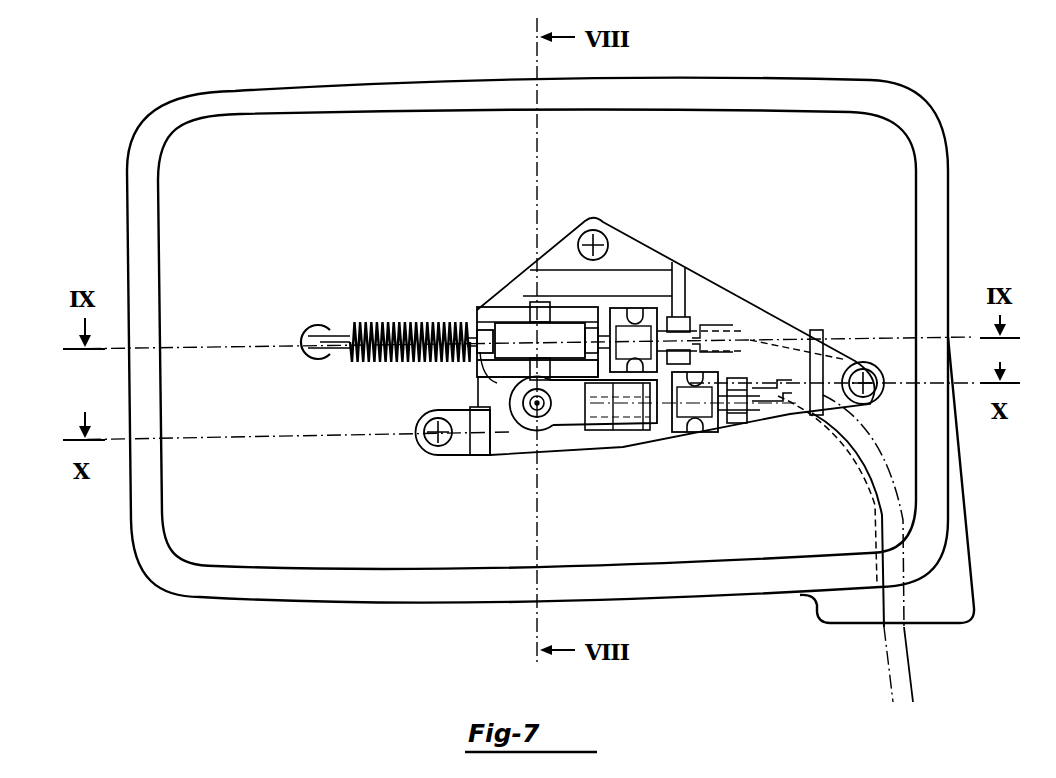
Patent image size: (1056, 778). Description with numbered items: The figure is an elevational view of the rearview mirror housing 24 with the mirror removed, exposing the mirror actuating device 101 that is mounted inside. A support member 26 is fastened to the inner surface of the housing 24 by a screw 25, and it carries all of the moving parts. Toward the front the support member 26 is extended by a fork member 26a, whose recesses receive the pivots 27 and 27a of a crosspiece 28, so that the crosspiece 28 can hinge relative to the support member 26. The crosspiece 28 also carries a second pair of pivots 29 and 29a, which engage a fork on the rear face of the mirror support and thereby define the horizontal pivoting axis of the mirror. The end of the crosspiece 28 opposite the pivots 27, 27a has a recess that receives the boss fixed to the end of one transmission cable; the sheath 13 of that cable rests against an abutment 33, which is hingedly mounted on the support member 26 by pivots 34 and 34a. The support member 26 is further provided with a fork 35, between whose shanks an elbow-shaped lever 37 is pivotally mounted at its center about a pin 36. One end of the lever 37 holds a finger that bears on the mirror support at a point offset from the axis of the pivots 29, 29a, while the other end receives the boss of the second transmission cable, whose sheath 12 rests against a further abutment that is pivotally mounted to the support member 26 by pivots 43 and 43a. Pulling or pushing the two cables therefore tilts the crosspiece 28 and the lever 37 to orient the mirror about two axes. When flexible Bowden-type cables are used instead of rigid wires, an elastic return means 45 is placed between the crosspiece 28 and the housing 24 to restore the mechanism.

The sheath 12 is at (852, 464).
The sheath 13 is at (897, 483).
The rearview mirror housing 24 is at (832, 80).
The screw 25 is at (600, 228).
The support member 26 is at (738, 358).
The fork member 26a is at (490, 372).
The pivot 27 is at (533, 310).
The pivot 27a is at (537, 417).
The crosspiece 28 is at (558, 335).
The pivot 29 is at (478, 335).
The pivot 29a is at (636, 318).
The abutment 33 is at (700, 328).
The pivot 34 is at (762, 248).
The pivot 34a is at (742, 356).
The fork 35 is at (695, 433).
The pin 36 is at (625, 430).
The elbow-shaped lever 37 is at (568, 415).
The pivot 43 is at (743, 360).
The pivot 43a is at (735, 425).
The elastic return means 45 is at (387, 326).
The mirror actuating device 101 is at (587, 328).